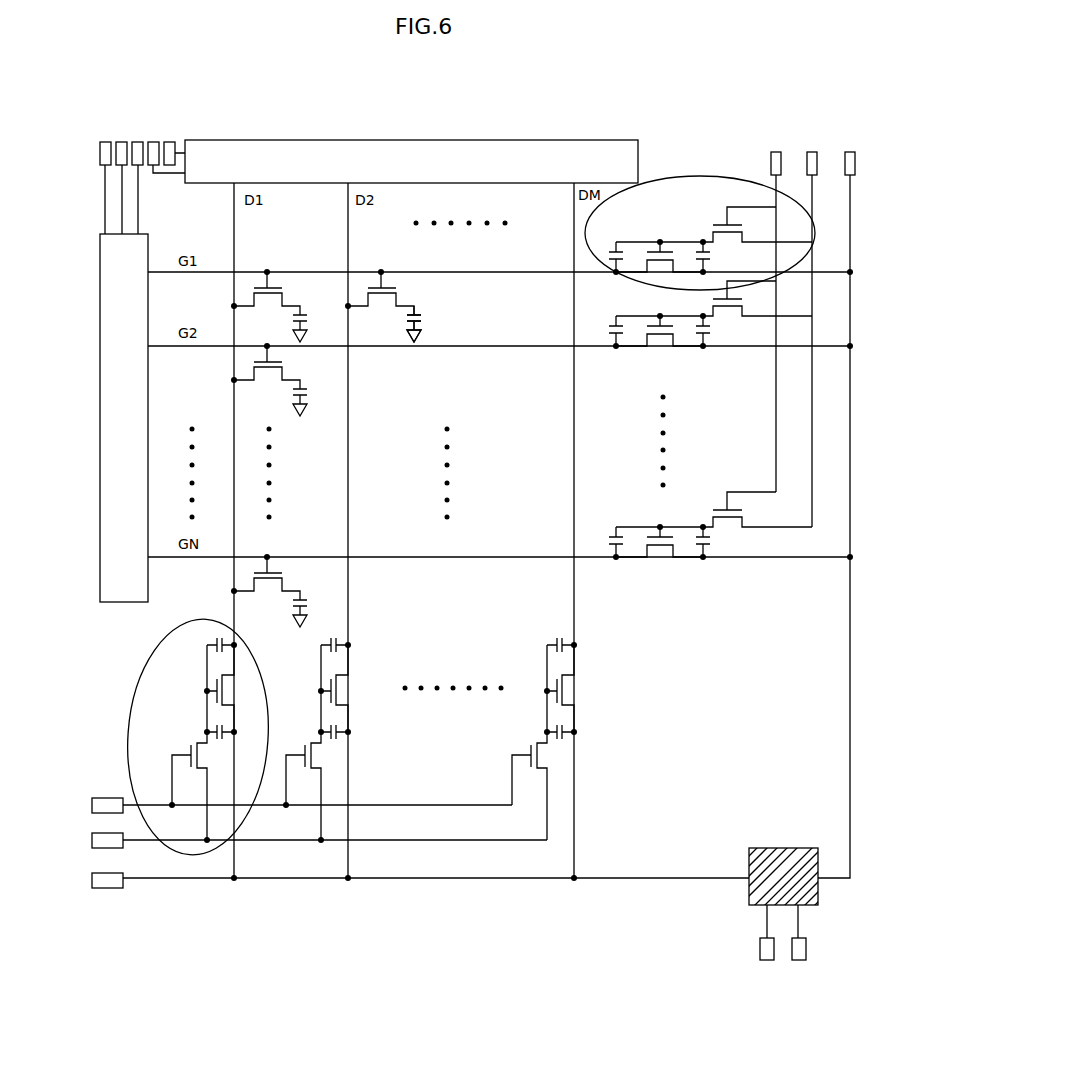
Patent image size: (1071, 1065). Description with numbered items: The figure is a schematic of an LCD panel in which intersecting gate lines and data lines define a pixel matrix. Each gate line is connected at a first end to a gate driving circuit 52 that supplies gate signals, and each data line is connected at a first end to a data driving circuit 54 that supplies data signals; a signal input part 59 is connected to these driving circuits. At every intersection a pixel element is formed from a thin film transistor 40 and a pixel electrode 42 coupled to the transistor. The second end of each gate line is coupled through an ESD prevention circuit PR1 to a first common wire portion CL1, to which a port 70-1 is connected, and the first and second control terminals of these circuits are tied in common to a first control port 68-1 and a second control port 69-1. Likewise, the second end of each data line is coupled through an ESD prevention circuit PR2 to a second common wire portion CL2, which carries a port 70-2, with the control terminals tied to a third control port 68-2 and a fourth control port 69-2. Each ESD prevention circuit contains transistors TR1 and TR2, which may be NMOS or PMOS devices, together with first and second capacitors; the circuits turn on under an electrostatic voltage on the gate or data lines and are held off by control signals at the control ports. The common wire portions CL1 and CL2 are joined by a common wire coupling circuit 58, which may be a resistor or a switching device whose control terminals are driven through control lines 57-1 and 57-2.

The signal input part 59 is at (140, 118).
The data driving circuit 54 is at (527, 140).
The gate driving circuit 52 is at (100, 318).
The thin film transistor 40 is at (398, 285).
The pixel electrode 42 is at (420, 316).
The first control port 68-1 is at (771, 155).
The second control port 69-1 is at (812, 152).
The port 70-1 is at (850, 152).
The third control port 68-2 is at (98, 798).
The fourth control port 69-2 is at (92, 840).
The port 70-2 is at (103, 888).
The common wire coupling circuit 58 is at (830, 893).
The control line 57-1 is at (765, 960).
The control line 57-2 is at (798, 960).
The ESD prevention circuit PR1 is at (758, 233).
The ESD prevention circuit PR2 is at (250, 684).
The first transistor TR1 is at (642, 244).
The second transistor TR2 is at (698, 214).
The first common wire portion CL1 is at (850, 632).
The second common wire portion CL2 is at (620, 878).